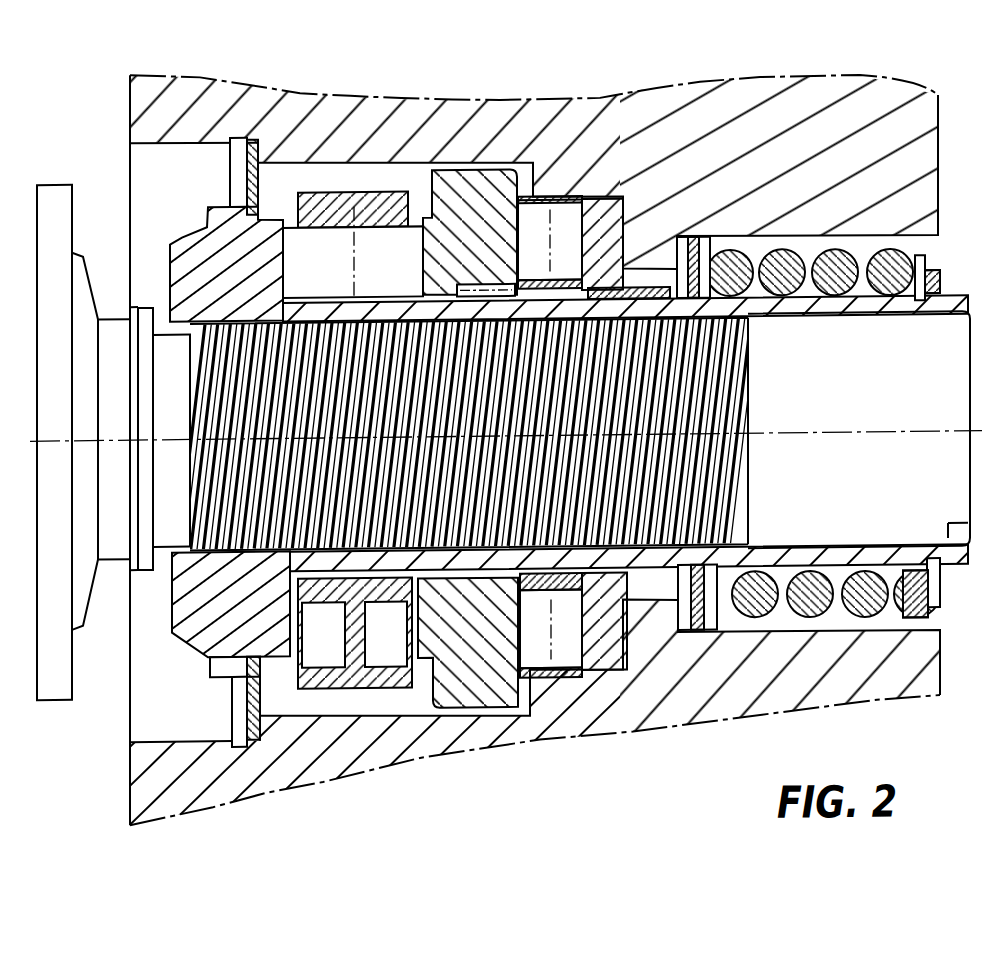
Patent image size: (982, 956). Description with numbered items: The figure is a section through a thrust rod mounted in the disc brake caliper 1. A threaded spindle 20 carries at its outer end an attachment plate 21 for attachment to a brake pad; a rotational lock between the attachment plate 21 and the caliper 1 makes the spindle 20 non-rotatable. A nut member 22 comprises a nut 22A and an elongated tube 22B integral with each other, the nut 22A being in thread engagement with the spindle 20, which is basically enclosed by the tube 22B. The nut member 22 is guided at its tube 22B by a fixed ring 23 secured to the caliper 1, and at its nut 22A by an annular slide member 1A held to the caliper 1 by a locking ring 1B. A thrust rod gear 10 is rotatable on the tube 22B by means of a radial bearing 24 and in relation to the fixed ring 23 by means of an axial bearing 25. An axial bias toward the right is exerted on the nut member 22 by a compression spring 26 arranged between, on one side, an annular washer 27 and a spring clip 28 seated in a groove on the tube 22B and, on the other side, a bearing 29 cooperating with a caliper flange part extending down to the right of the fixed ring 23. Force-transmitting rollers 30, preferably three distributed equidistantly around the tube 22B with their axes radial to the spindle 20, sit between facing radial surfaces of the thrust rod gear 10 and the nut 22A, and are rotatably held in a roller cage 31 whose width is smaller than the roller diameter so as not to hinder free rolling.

The caliper 1 is at (650, 708).
The annular slide member 1A is at (263, 727).
The locking ring 1B is at (237, 744).
The thrust rod gear 10 is at (467, 191).
The threaded spindle 20 is at (247, 314).
The attachment plate 21 is at (56, 202).
The nut member 22 is at (205, 243).
The nut 22A is at (200, 617).
The elongated tube 22B is at (623, 562).
The fixed ring 23 is at (615, 92).
The radial bearing 24 is at (485, 287).
The axial bearing 25 is at (565, 215).
The compression spring 26 is at (783, 260).
The annular washer 27 is at (938, 290).
The spring clip 28 is at (945, 282).
The bearing 29 is at (688, 245).
The force-transmitting rollers 30 is at (325, 251).
The roller cage 31 is at (380, 202).